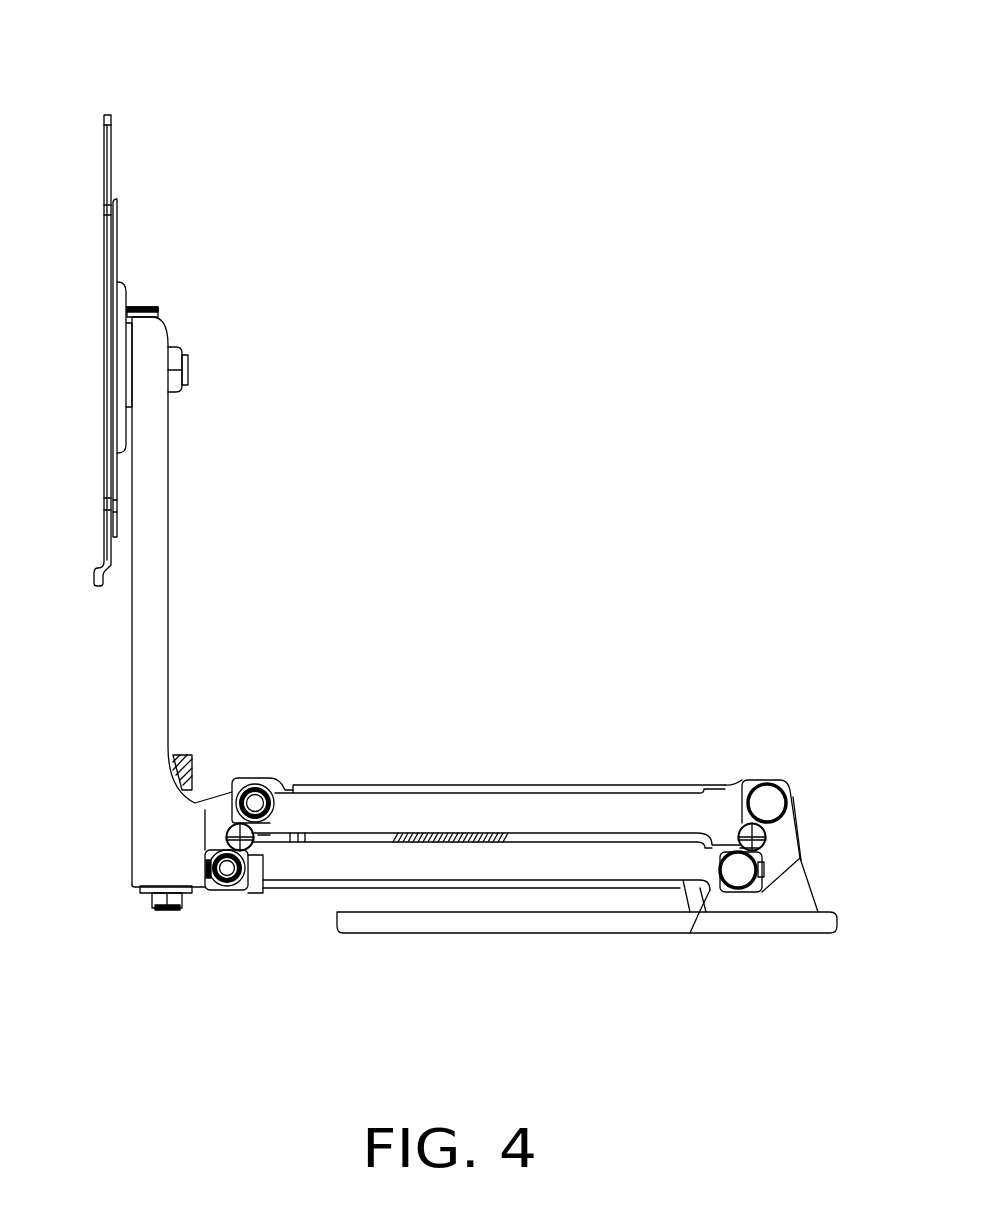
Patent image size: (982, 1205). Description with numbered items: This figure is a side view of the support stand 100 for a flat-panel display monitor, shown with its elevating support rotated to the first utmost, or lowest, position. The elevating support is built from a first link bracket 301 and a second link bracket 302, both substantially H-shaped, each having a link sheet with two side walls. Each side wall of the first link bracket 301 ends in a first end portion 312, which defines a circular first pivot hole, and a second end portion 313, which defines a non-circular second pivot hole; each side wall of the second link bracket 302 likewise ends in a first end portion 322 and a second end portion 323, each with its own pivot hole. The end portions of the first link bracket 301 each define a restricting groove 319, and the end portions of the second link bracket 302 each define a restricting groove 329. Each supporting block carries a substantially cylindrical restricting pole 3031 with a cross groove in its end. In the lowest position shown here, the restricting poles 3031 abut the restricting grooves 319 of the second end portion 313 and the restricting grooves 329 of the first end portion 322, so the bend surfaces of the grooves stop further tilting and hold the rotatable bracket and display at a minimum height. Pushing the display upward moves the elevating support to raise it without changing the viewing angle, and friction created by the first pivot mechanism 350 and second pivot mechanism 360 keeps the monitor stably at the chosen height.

The support stand 100 is at (425, 60).
The first link bracket 301 is at (492, 803).
The second link bracket 302 is at (478, 868).
The restricting pole 3031 is at (233, 828).
The first end portion 312 is at (276, 786).
The second end portion 313 is at (748, 781).
The restricting groove 319 is at (270, 822).
The first end portion 322 is at (230, 893).
The second end portion 323 is at (705, 882).
The restricting groove 329 is at (228, 844).
The first pivot mechanism 350 is at (249, 888).
The second pivot mechanism 360 is at (738, 873).